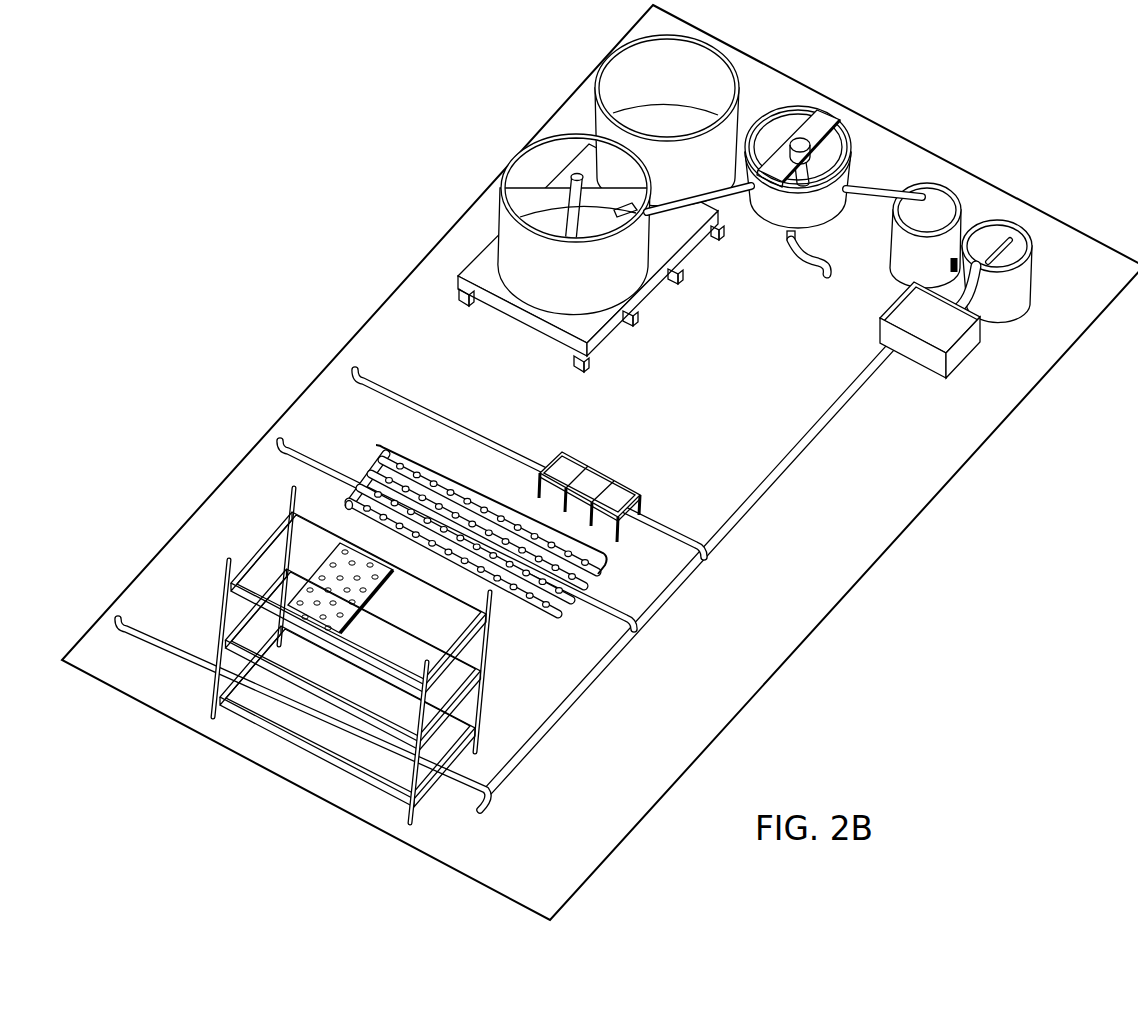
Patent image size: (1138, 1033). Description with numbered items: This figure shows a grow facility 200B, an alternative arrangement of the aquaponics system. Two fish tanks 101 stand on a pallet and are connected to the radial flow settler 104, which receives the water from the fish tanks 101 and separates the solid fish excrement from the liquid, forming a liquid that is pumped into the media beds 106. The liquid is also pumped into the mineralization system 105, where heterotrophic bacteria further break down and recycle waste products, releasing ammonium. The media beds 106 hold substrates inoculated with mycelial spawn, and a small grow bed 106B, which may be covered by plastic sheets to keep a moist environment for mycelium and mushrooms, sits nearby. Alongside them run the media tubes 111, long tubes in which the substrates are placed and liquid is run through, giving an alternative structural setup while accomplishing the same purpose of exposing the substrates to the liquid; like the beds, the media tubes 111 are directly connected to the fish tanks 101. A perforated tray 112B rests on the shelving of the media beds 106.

The grow facility 200B is at (316, 232).
The fish tanks 101 is at (622, 68).
The radial flow settler 104 is at (822, 123).
The mineralization system 105 is at (940, 200).
The media beds 106 is at (297, 663).
The grow beds 106B is at (618, 488).
The media tubes 111 is at (516, 507).
The perforated tray 112B is at (327, 608).